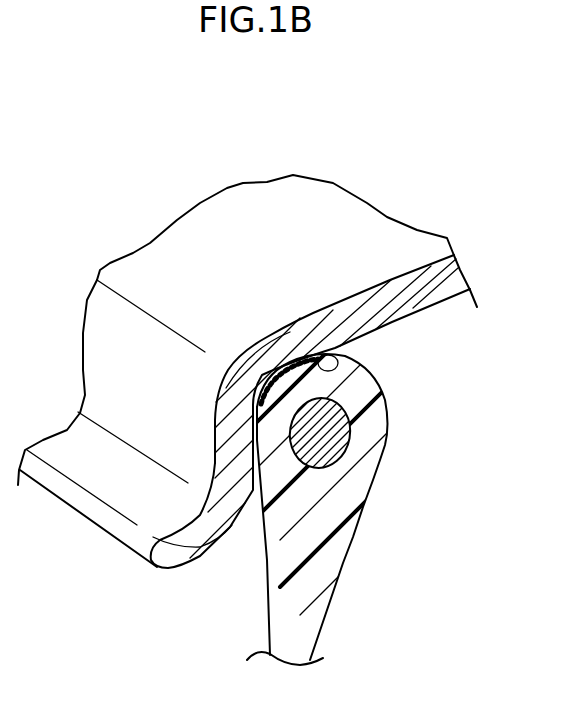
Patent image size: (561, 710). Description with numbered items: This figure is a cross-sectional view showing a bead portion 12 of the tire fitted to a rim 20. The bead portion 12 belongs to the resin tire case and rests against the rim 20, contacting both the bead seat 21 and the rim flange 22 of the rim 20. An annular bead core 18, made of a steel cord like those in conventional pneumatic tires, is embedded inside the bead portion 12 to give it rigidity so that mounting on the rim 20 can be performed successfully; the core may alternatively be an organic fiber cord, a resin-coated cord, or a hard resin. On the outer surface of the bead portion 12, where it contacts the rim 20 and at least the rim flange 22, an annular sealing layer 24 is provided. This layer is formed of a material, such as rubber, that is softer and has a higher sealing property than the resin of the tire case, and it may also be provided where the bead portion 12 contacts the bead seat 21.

The rim 20 is at (297, 150).
The sealing layer 24 is at (253, 398).
The rim flange 22 is at (137, 417).
The bead portion 12 is at (376, 477).
The bead core 18 is at (333, 437).
The bead seat 21 is at (333, 357).